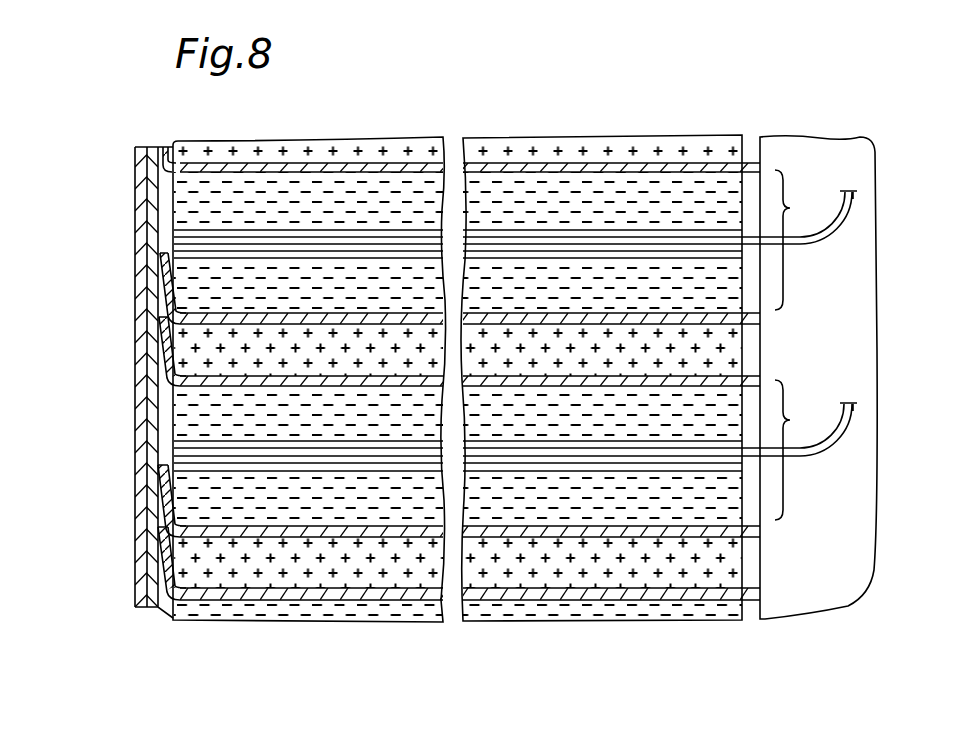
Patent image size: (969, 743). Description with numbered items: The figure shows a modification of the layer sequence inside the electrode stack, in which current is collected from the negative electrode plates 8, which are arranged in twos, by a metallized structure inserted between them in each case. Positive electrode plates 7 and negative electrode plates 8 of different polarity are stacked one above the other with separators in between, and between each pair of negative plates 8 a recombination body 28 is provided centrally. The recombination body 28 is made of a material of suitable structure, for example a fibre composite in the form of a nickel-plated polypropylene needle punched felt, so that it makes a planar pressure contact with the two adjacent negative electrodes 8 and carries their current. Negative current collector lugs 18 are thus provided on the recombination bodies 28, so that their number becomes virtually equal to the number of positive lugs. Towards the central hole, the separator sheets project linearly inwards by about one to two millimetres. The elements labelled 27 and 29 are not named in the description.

The positive electrode plate 7 is at (645, 148).
The negative electrode plate 8 is at (272, 293).
The negative current collector lug 18 is at (853, 403).
The collector electrode foil 27 is at (409, 172).
The recombination body 28 is at (193, 242).
The lead terminals 29 is at (799, 345).